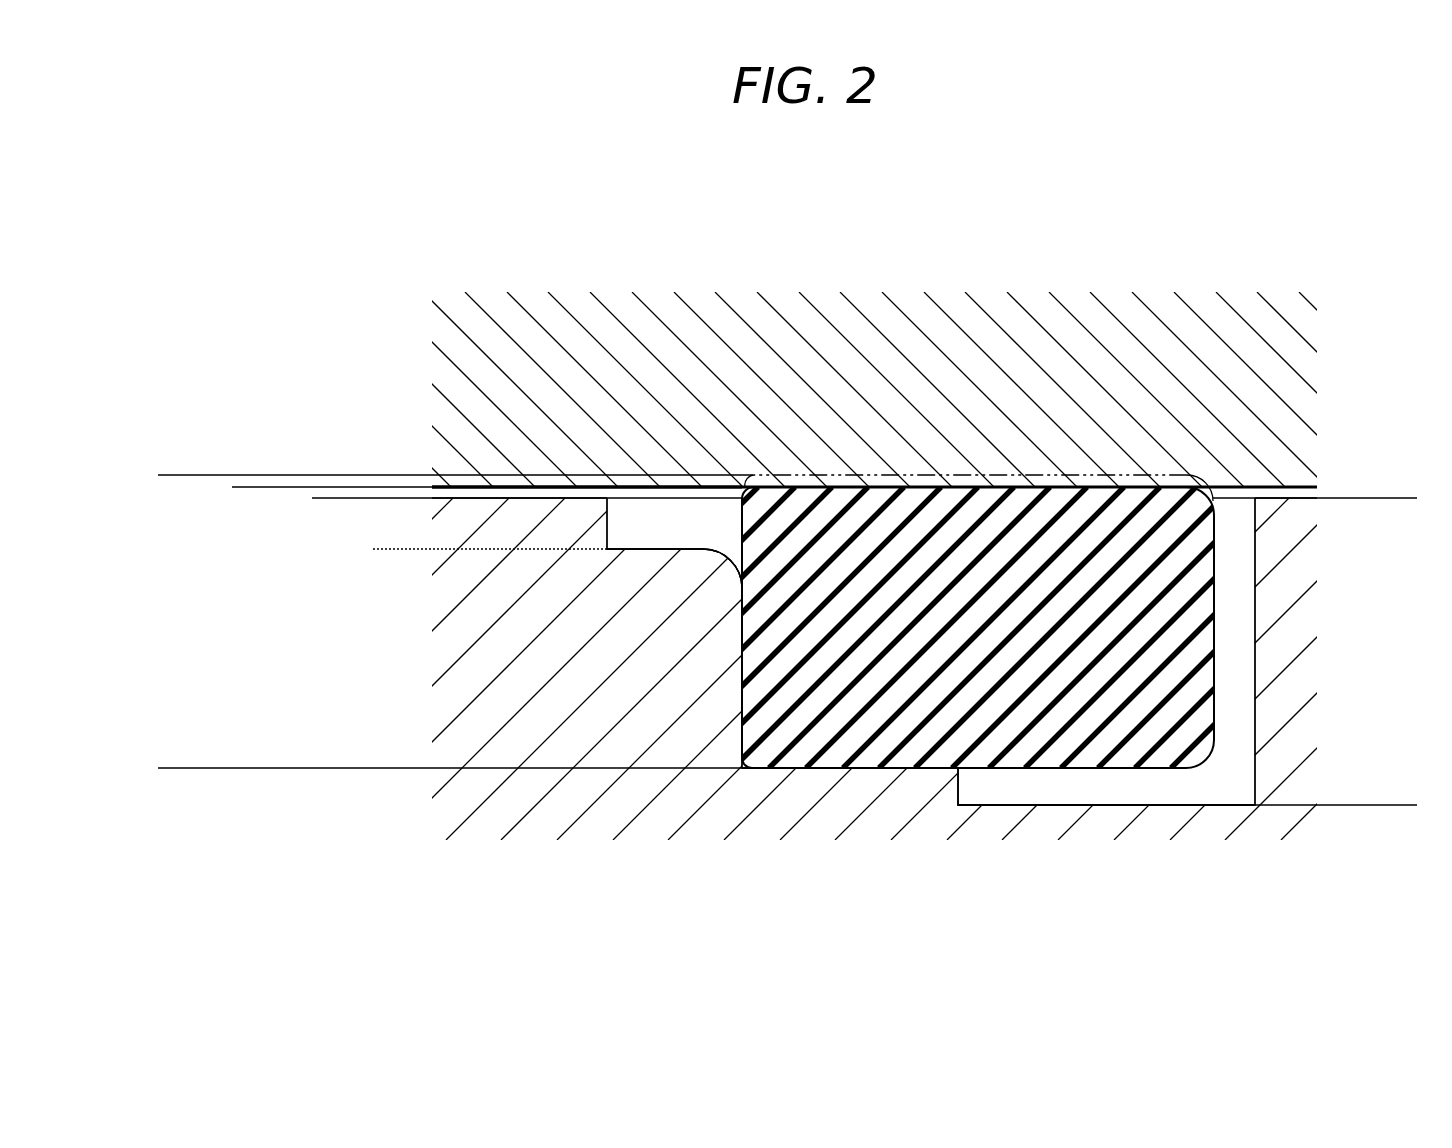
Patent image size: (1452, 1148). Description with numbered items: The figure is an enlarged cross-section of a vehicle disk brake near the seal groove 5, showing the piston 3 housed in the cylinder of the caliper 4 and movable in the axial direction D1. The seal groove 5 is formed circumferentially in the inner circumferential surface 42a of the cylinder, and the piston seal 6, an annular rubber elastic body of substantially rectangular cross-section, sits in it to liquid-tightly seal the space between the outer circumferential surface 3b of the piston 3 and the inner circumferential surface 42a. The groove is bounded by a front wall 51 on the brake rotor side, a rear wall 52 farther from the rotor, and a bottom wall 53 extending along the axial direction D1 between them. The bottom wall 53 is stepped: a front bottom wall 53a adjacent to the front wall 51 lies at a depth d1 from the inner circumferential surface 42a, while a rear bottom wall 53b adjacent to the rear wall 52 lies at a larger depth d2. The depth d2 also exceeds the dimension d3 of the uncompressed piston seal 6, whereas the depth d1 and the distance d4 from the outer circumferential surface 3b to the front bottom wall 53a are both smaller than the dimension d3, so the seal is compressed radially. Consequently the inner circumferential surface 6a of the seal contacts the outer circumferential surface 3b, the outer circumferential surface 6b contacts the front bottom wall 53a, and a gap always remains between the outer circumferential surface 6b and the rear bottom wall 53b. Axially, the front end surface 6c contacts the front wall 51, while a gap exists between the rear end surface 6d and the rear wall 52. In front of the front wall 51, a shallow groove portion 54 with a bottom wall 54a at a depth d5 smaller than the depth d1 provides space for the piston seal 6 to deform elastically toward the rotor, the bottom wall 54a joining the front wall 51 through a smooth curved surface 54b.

The piston 3 is at (735, 330).
The outer circumferential surface of the piston 3b is at (555, 485).
The caliper 4 is at (573, 800).
The inner circumferential surface of the cylinder 42a is at (467, 498).
The seal groove 5 is at (1233, 495).
The front wall 51 is at (752, 725).
The rear wall 52 is at (1247, 742).
The bottom wall 53 is at (882, 892).
The front bottom wall 53a is at (913, 770).
The rear bottom wall 53b is at (1003, 800).
The shallow groove portion 54 is at (670, 496).
The bottom wall of the shallow groove portion 54a is at (648, 549).
The smooth curved surface 54b is at (742, 585).
The piston seal 6 is at (990, 565).
The inner circumferential surface of the piston seal 6a is at (1093, 487).
The outer circumferential surface of the piston seal 6b is at (1070, 768).
The front end surface 6c is at (742, 675).
The rear end surface 6d is at (1214, 630).
The axial direction D1 is at (933, 163).
The depth of the front bottom wall d1 is at (317, 767).
The depth of the rear bottom wall d2 is at (1403, 499).
The dimension of the uncompressed piston seal d3 is at (171, 476).
The distance from the piston outer surface to the front bottom wall d4 is at (242, 488).
The depth of the shallow groove portion d5 is at (388, 499).